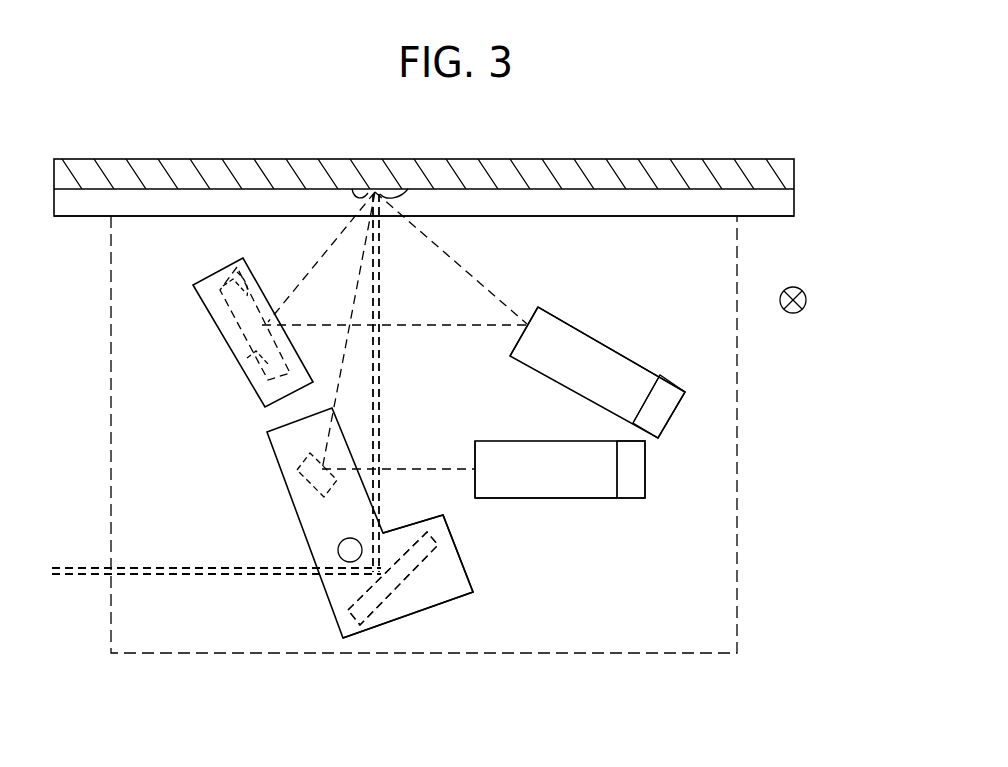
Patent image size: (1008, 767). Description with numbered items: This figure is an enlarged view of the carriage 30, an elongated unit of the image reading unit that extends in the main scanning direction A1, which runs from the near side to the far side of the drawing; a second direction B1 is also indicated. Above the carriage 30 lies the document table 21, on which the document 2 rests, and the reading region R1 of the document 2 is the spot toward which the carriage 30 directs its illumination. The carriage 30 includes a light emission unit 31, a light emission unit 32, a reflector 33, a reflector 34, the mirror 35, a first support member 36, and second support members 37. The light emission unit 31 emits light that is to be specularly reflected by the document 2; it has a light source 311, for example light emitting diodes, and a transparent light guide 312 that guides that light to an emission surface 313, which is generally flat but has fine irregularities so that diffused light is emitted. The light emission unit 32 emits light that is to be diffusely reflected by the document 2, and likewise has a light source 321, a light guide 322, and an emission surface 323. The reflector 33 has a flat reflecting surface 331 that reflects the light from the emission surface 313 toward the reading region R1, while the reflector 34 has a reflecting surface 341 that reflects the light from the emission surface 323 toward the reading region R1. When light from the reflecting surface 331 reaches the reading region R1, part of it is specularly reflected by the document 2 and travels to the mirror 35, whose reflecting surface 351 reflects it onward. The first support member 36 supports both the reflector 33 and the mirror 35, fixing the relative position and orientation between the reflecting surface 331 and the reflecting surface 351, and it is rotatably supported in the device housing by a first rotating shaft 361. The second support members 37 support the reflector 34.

The document 2 is at (796, 170).
The document table 21 is at (796, 202).
The reading region R1 is at (394, 382).
The main scanning direction A1 is at (793, 280).
The second axis B1 is at (80, 565).
The carriage 30 is at (737, 405).
The light emission unit 31 is at (702, 570).
The light source 311 is at (630, 499).
The light guide 312 is at (577, 499).
The emission surface 313 is at (476, 455).
The light emission unit 32 is at (708, 308).
The light source 321 is at (667, 378).
The light guide 322 is at (577, 322).
The emission surface 323 is at (528, 321).
The reflector 33 is at (313, 488).
The reflecting surface 331 is at (303, 450).
The reflector 34 is at (230, 357).
The reflecting surface 341 is at (232, 266).
The mirror 35 is at (368, 598).
The reflecting surface 351 is at (368, 598).
The first support member 36 is at (463, 562).
The first rotating shaft 361 is at (338, 552).
The second support members 37 is at (203, 305).